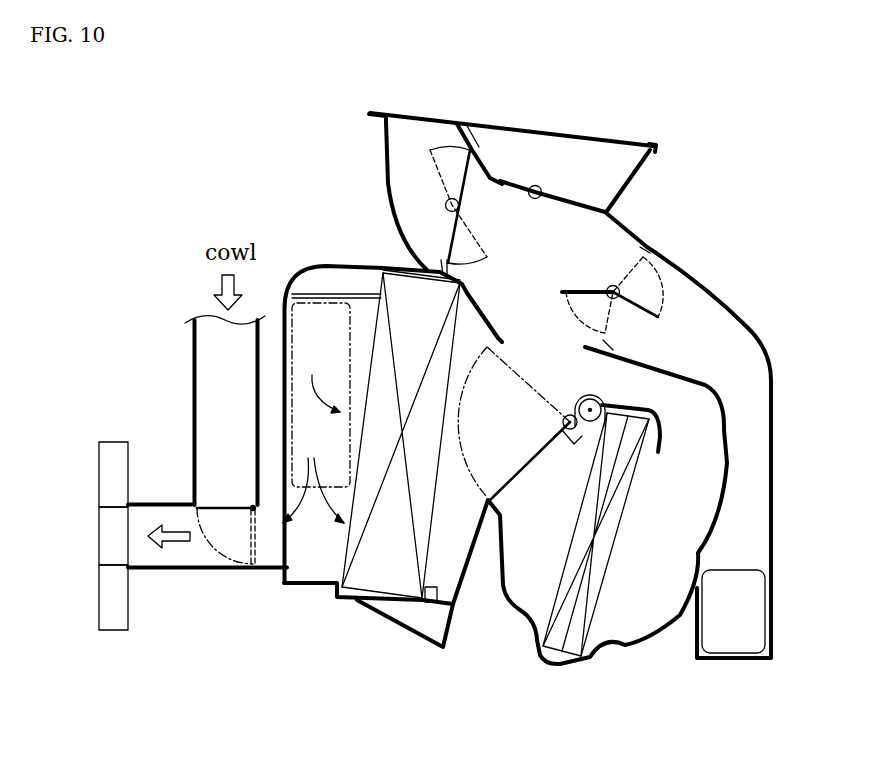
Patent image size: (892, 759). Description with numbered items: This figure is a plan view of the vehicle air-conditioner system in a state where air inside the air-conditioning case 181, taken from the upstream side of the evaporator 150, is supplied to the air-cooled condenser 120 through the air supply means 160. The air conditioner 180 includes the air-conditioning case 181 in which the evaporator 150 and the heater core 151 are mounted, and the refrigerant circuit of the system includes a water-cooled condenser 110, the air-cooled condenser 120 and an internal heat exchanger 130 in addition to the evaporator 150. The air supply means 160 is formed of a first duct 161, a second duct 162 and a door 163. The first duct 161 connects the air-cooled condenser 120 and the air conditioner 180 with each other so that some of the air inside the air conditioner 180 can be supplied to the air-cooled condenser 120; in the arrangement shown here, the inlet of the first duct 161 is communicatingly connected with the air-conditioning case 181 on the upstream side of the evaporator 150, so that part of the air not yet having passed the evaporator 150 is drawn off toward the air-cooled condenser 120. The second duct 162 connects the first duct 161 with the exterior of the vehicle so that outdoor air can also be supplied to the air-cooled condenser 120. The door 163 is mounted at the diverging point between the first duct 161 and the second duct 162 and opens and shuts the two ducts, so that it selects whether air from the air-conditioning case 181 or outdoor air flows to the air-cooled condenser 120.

The water-cooled condenser 110 is at (99, 478).
The air-cooled condenser 120 is at (99, 540).
The internal heat exchanger 130 is at (99, 602).
The evaporator 150 is at (393, 573).
The heater core 151 is at (568, 640).
The air supply means 160 is at (194, 581).
The first duct 161 is at (257, 570).
The second duct 162 is at (192, 407).
The door 163 is at (222, 508).
The air conditioner 180 is at (730, 249).
The air-conditioning case 181 is at (773, 498).